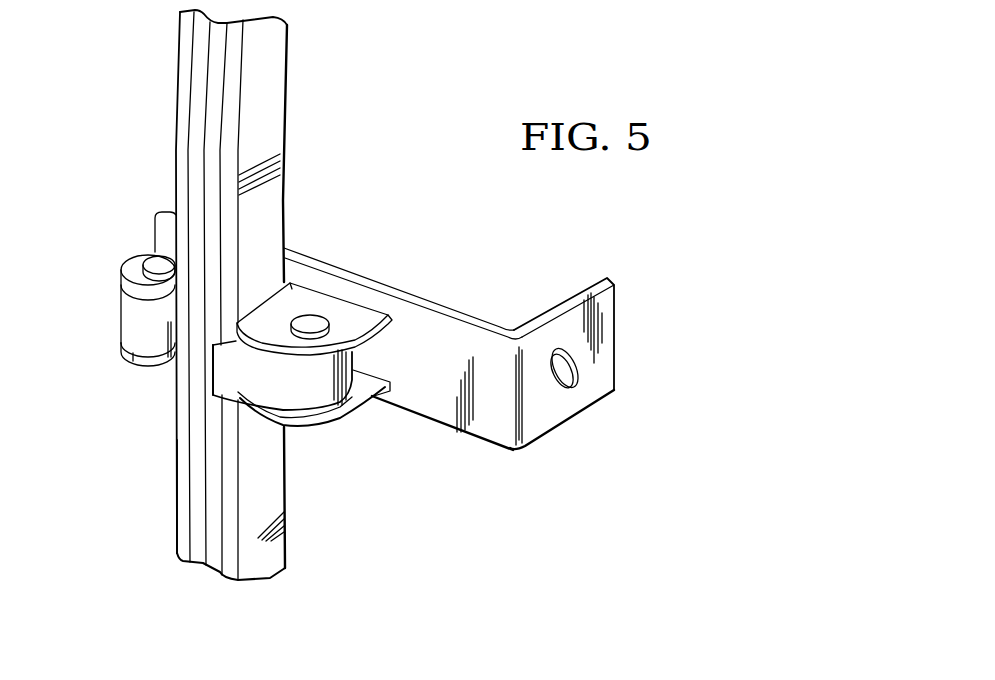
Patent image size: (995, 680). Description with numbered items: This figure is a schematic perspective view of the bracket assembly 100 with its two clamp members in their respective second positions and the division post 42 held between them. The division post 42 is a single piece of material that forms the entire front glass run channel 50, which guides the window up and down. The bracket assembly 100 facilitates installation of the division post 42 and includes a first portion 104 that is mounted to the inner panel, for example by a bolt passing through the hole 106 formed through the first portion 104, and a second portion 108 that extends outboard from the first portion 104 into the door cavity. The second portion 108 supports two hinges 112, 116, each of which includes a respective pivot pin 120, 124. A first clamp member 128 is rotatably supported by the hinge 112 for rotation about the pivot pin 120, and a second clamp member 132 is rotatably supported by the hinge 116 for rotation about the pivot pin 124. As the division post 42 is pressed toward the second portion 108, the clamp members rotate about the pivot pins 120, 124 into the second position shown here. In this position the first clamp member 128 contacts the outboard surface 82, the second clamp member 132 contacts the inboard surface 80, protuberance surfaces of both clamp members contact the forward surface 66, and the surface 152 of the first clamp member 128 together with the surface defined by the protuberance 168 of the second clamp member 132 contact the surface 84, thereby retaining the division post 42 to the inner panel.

The division post 42 is at (178, 120).
The front glass run channel 50 is at (213, 83).
The forward surface 66 is at (285, 108).
The inboard surface 80 is at (270, 463).
The outboard surface 82 is at (177, 495).
The surface 84 is at (173, 537).
The bracket assembly 100 is at (375, 228).
The first portion 104 is at (565, 308).
The hole 106 is at (575, 380).
The second portion 108 is at (433, 308).
The hinge 112 is at (166, 236).
The hinge 116 is at (343, 423).
The pivot pin 120 is at (163, 263).
The pivot pin 124 is at (310, 322).
The first clamp member 128 is at (133, 325).
The second clamp member 132 is at (380, 402).
The surface 152 is at (165, 342).
The protuberance 168 is at (213, 367).